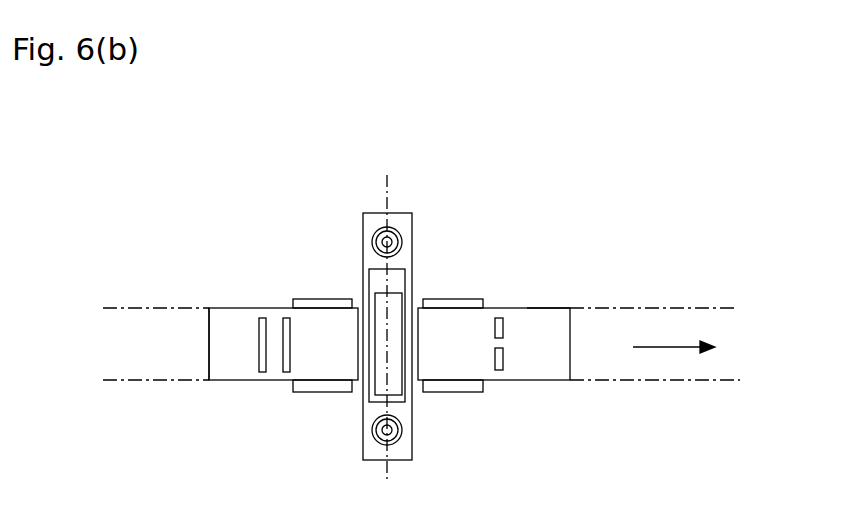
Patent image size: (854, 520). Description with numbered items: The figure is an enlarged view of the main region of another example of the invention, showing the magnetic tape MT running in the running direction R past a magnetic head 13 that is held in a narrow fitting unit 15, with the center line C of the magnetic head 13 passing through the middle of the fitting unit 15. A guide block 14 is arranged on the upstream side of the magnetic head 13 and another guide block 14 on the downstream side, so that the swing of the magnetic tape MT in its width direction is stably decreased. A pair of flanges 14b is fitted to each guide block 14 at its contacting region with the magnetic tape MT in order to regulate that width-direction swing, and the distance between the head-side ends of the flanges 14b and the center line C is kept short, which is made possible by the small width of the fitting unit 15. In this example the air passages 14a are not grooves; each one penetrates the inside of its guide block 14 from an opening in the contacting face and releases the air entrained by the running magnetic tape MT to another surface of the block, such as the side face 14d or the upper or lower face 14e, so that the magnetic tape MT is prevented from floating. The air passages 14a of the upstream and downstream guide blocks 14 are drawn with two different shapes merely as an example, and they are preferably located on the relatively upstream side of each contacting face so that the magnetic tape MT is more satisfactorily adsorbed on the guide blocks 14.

The magnetic head 13 is at (404, 297).
The guide block 14 is at (232, 308).
The air passage 14a is at (284, 373).
The flange 14b is at (308, 298).
The side face 14d is at (208, 338).
The upper or lower face 14e is at (528, 307).
The fitting unit 15 is at (363, 216).
The center line C is at (389, 190).
The running direction R is at (665, 345).
The magnetic tape MT is at (123, 382).